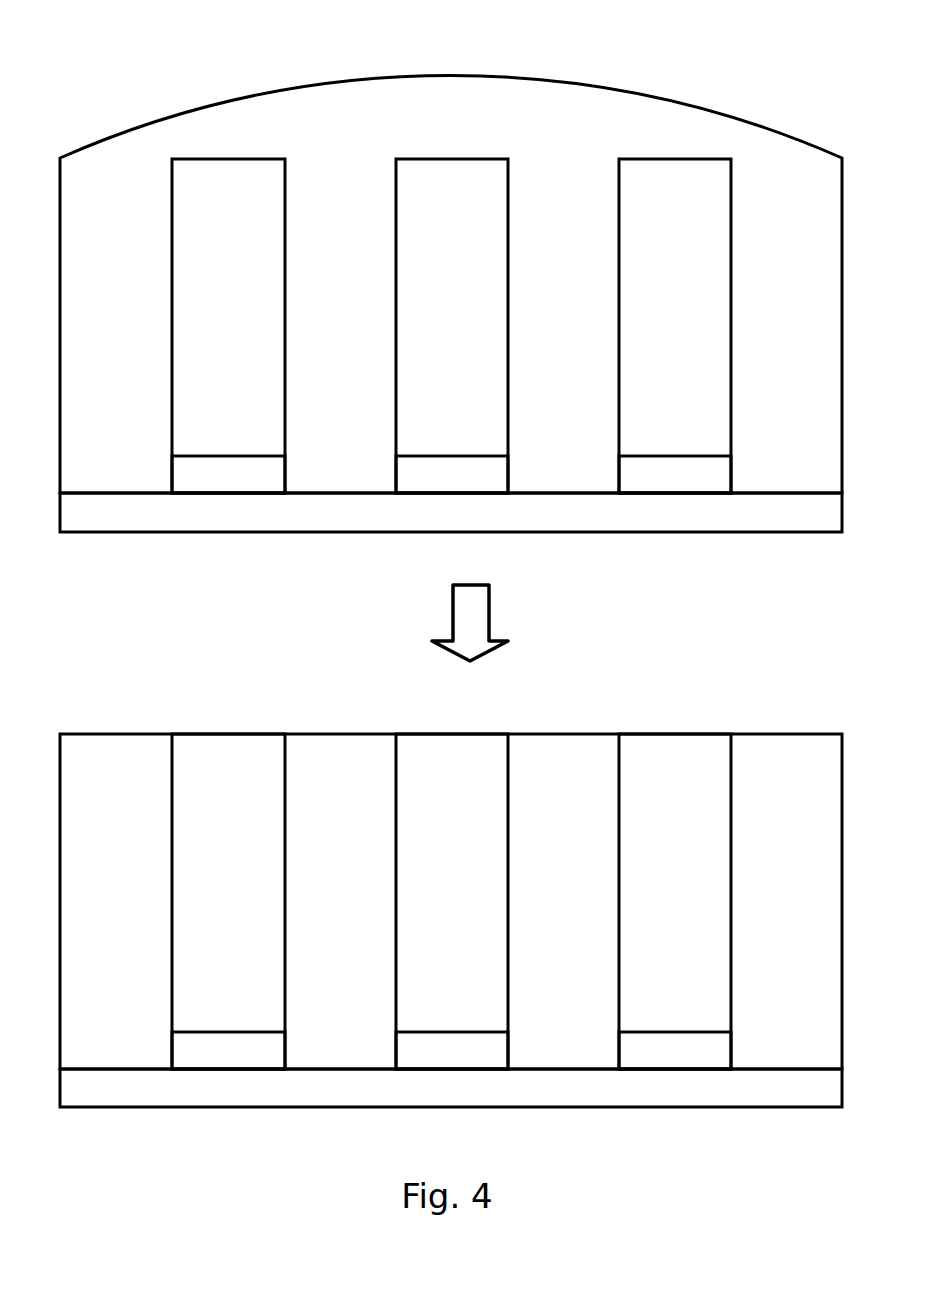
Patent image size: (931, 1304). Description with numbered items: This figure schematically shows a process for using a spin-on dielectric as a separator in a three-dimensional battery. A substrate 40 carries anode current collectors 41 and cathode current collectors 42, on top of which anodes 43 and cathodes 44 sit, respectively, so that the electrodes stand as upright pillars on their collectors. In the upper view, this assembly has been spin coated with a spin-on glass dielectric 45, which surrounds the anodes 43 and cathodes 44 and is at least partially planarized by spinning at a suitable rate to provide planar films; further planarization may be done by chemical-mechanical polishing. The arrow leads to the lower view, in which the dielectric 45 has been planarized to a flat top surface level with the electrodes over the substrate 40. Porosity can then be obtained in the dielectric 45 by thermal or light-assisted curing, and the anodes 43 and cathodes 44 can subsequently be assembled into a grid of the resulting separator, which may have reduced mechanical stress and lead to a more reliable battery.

The substrate 40 is at (118, 513).
The anode current collectors 41 is at (233, 480).
The cathode current collectors 42 is at (478, 480).
The anodes 43 is at (215, 180).
The cathodes 44 is at (462, 178).
The spin-on glass dielectric 45 is at (340, 137).